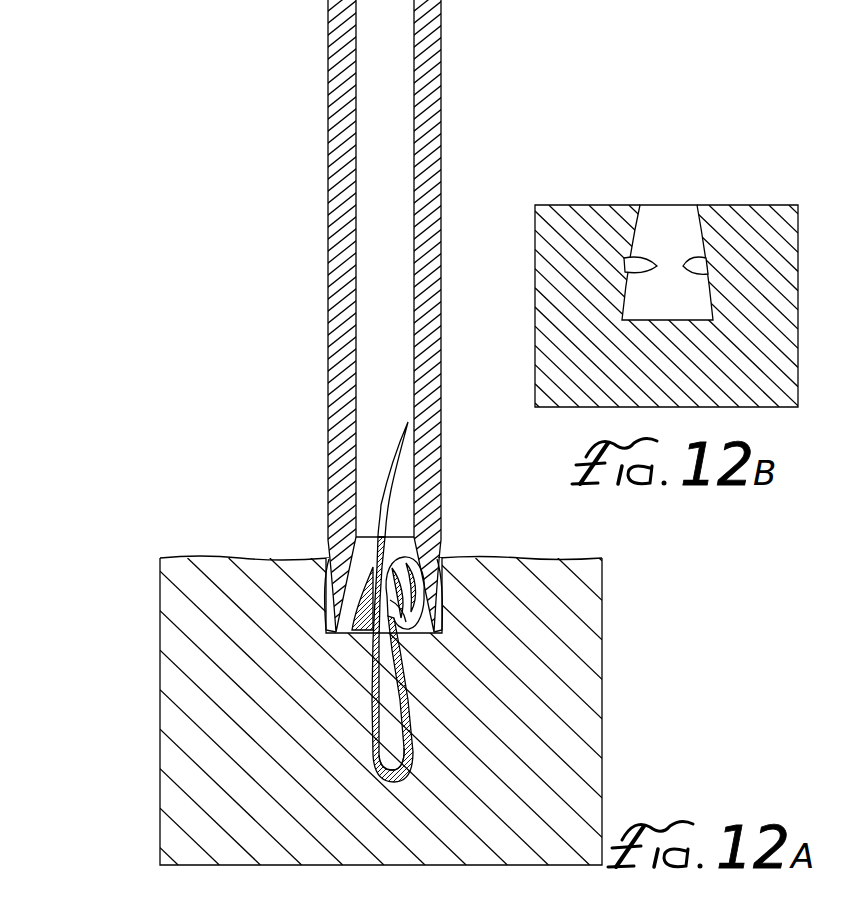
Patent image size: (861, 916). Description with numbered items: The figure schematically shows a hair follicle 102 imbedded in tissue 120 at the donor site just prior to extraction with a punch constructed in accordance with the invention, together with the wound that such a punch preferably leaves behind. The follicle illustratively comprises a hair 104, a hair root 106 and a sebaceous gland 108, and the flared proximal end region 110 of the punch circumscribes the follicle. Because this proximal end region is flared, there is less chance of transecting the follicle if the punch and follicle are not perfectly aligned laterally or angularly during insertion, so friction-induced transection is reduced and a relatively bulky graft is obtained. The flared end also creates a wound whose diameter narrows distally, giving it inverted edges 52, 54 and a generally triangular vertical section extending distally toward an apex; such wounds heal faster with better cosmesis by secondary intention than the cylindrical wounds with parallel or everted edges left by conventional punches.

In FIG. 12A, the hair follicle 102 is at (266, 590).
In FIG. 12A, the hair 104 is at (385, 495).
In FIG. 12A, the hair root 106 is at (379, 747).
In FIG. 12A, the sebaceous gland 108 is at (444, 619).
In FIG. 12A, the flared proximal end region 110 is at (334, 551).
In FIG. 12A, the tissue 120 is at (258, 622).
In FIG. 12B, the inverted edge 52 is at (630, 268).
In FIG. 12B, the inverted edge 54 is at (710, 273).